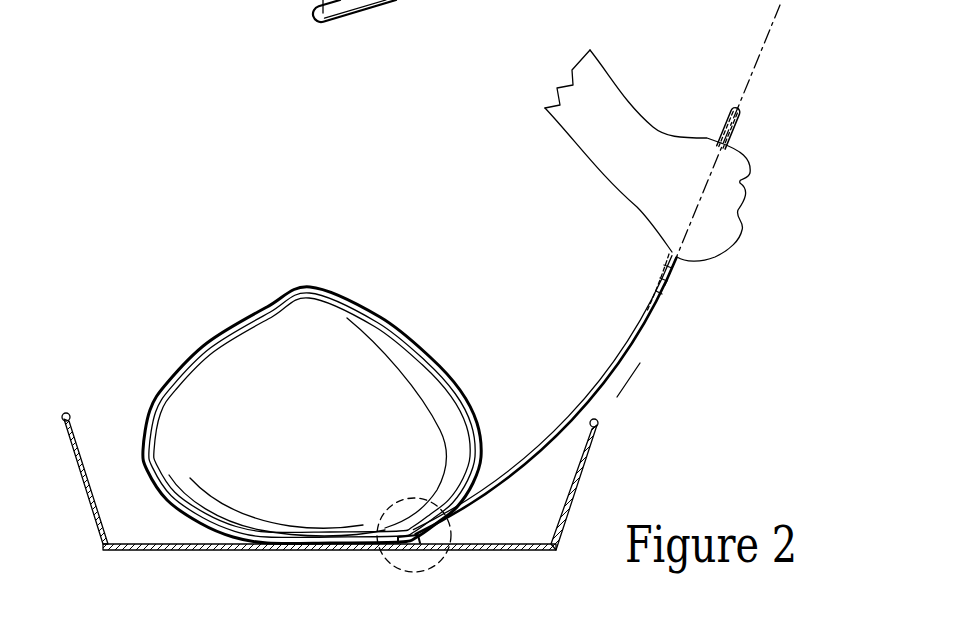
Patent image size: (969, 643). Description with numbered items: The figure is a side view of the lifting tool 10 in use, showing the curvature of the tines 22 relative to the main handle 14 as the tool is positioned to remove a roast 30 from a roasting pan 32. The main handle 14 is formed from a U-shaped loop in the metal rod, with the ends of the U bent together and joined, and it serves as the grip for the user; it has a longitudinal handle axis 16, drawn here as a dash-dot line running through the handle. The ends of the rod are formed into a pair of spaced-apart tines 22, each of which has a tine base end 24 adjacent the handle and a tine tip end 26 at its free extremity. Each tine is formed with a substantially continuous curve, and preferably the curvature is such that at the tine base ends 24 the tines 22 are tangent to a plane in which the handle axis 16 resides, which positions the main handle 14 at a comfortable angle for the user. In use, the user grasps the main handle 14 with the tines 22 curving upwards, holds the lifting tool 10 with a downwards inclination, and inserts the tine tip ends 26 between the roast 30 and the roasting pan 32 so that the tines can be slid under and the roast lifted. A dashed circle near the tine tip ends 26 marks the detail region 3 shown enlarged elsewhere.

The lifting tool 10 is at (632, 247).
The main handle 14 is at (689, 288).
The longitudinal handle axis 16 is at (760, 50).
The tines 22 is at (540, 427).
The tine base end 24 is at (662, 300).
The tine tip end 26 is at (412, 538).
The roast 30 is at (265, 338).
The roasting pan 32 is at (85, 447).
The detail view circle (FIG. 3) 3 is at (370, 521).